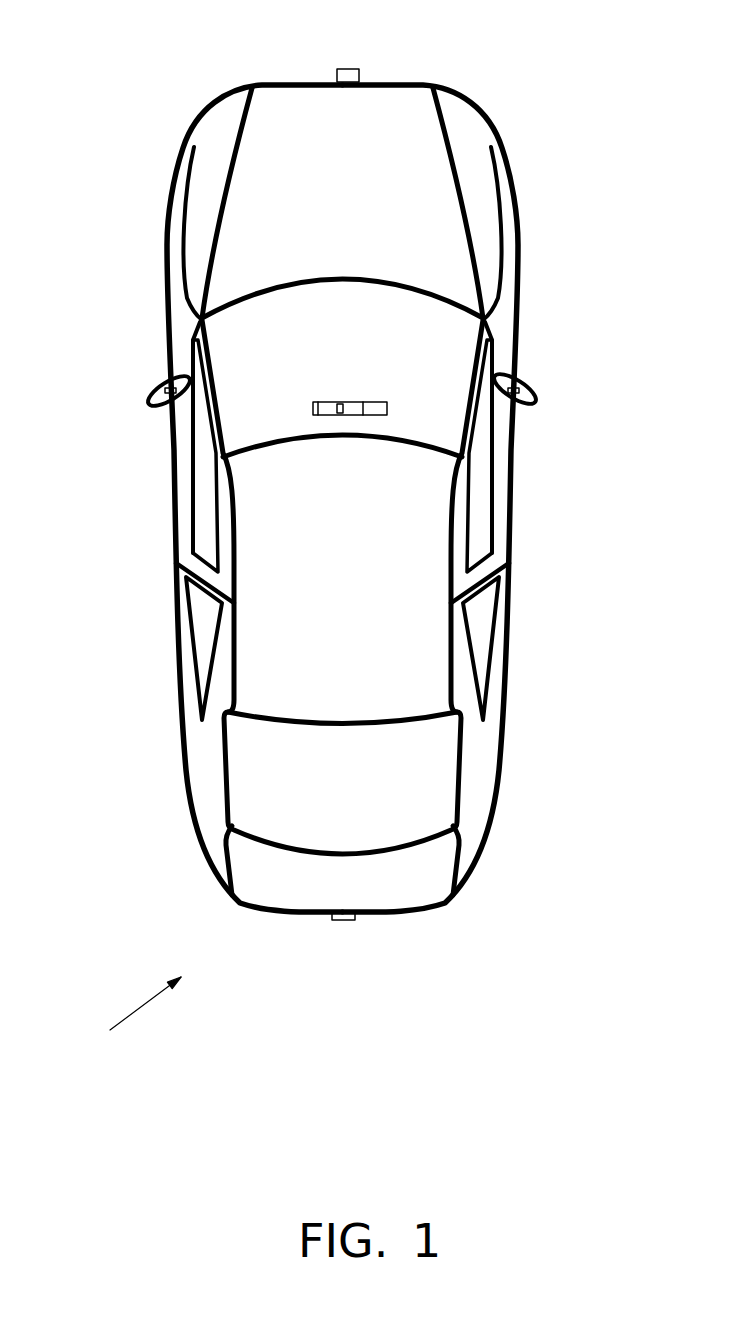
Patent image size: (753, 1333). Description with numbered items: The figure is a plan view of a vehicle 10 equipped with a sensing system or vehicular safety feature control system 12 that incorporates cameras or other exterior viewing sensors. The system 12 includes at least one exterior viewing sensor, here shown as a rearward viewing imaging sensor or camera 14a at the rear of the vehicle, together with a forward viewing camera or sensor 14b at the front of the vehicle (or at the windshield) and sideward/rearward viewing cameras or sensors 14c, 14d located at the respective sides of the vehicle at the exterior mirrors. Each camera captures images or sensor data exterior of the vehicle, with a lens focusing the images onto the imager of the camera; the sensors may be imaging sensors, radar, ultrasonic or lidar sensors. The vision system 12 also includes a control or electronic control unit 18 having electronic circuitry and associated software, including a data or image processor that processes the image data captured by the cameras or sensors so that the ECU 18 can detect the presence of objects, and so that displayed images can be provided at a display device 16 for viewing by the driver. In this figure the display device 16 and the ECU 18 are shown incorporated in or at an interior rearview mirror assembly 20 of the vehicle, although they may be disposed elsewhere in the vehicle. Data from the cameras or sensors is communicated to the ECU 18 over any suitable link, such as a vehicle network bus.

The vehicle 10 is at (98, 93).
The vehicular safety feature control system 12 is at (125, 1016).
The rearward viewing imaging sensor or camera 14a is at (349, 919).
The forward viewing camera or sensor 14b is at (353, 68).
The sideward/rearward viewing camera or sensor 14c is at (155, 383).
The sideward/rearward viewing camera or sensor 14d is at (530, 383).
The display device 16 is at (328, 403).
The electronic control unit 18 is at (348, 402).
The interior rearview mirror assembly 20 is at (387, 403).